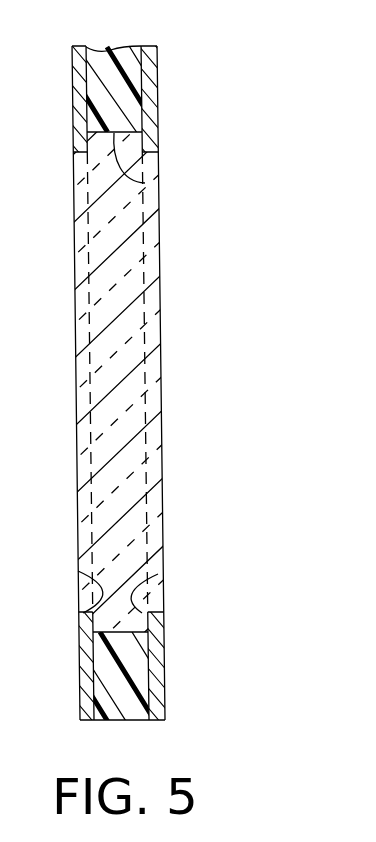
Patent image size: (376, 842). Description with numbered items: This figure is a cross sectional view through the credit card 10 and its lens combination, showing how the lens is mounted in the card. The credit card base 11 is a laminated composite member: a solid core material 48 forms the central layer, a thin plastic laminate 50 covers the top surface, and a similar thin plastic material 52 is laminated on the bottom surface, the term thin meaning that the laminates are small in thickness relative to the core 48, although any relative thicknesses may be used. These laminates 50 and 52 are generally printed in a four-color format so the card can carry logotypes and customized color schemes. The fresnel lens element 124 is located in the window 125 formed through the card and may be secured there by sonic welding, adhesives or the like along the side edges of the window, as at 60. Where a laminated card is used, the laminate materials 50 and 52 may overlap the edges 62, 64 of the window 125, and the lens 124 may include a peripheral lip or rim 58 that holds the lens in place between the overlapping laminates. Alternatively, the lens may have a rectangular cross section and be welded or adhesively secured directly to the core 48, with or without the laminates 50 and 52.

The credit card 10 is at (69, 411).
The credit card base 11 is at (77, 694).
The solid core material 48 is at (117, 708).
The thin plastic laminate 50 is at (79, 666).
The thin plastic material 52 is at (153, 663).
The peripheral lip or rim 58 is at (97, 139).
The securing location along side edges of the window 60 is at (145, 183).
The window edge 62 is at (78, 571).
The window edge 64 is at (158, 574).
The fresnel lens element 124 is at (92, 339).
The window 125 is at (124, 118).